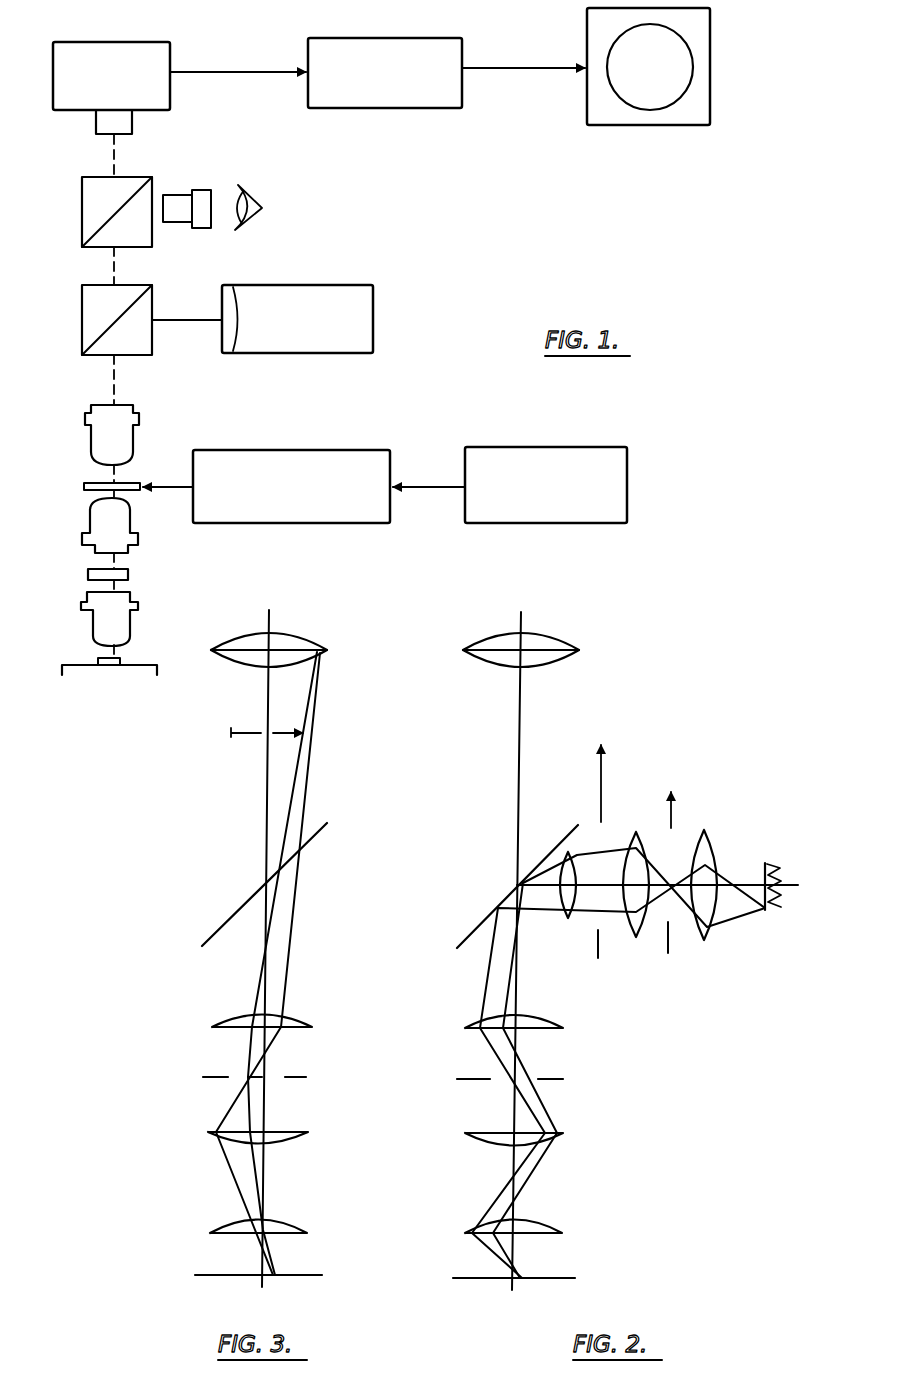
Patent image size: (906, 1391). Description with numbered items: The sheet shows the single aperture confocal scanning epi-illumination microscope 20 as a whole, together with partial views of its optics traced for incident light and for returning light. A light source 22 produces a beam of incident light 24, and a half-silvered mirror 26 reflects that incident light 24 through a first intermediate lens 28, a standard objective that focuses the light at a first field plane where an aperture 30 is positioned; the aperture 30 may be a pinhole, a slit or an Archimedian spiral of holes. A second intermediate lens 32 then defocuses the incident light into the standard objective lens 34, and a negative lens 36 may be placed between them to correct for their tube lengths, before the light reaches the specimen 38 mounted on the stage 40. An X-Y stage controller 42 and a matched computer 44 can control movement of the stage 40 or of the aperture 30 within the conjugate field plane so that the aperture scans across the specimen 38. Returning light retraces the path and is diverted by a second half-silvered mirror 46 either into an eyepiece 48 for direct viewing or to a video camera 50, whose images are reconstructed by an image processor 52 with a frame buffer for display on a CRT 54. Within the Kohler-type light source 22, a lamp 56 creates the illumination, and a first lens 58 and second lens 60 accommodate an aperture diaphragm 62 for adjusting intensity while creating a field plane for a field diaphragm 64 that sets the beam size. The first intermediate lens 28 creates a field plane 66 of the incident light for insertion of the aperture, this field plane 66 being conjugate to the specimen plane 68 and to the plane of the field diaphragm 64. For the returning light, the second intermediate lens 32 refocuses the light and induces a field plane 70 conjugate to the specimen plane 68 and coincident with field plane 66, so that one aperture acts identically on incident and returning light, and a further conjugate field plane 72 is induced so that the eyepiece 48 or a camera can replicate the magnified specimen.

In FIG. 1, the single aperture confocal scanning epi-illumination microscope 20 is at (456, 318).
In FIG. 1, the light source 22 is at (374, 302).
In FIG. 1, the incident light 24 is at (185, 322).
In FIG. 1, the half-silvered mirror 26 is at (82, 320).
In FIG. 3, the half-silvered mirror 26 is at (220, 930).
In FIG. 2, the half-silvered mirror 26 is at (480, 935).
In FIG. 1, the first intermediate lens 28 is at (90, 425).
In FIG. 3, the first intermediate lens 28 is at (298, 1020).
In FIG. 2, the first intermediate lens 28 is at (545, 1020).
In FIG. 1, the aperture 30 is at (84, 487).
In FIG. 1, the second intermediate lens 32 is at (90, 515).
In FIG. 3, the second intermediate lens 32 is at (286, 1142).
In FIG. 2, the second intermediate lens 32 is at (483, 1145).
In FIG. 1, the standard objective lens 34 is at (90, 620).
In FIG. 3, the standard objective lens 34 is at (298, 1222).
In FIG. 2, the standard objective lens 34 is at (540, 1222).
In FIG. 1, the negative lens 36 is at (88, 575).
In FIG. 1, the specimen 38 is at (120, 660).
In FIG. 1, the stage 40 is at (70, 660).
In FIG. 1, the X-Y stage controller 42 is at (295, 450).
In FIG. 1, the computer 44 is at (627, 490).
In FIG. 1, the second half-silvered mirror 46 is at (82, 210).
In FIG. 1, the eyepiece 48 is at (182, 195).
In FIG. 3, the eyepiece 48 is at (305, 636).
In FIG. 2, the eyepiece 48 is at (560, 636).
In FIG. 1, the video camera 50 is at (103, 42).
In FIG. 1, the image processor 52 is at (385, 38).
In FIG. 1, the CRT 54 is at (712, 65).
In FIG. 2, the lamp 56 is at (785, 878).
In FIG. 2, the first lens 58 is at (712, 850).
In FIG. 2, the second lens 60 is at (645, 928).
In FIG. 2, the aperture diaphragm 62 is at (675, 810).
In FIG. 2, the field diaphragm 64 is at (605, 778).
In FIG. 2, the field plane 66 is at (565, 1080).
In FIG. 3, the specimen plane 68 is at (210, 1272).
In FIG. 2, the specimen plane 68 is at (577, 1278).
In FIG. 3, the field plane 70 is at (308, 1077).
In FIG. 3, the conjugate field plane 72 is at (238, 736).